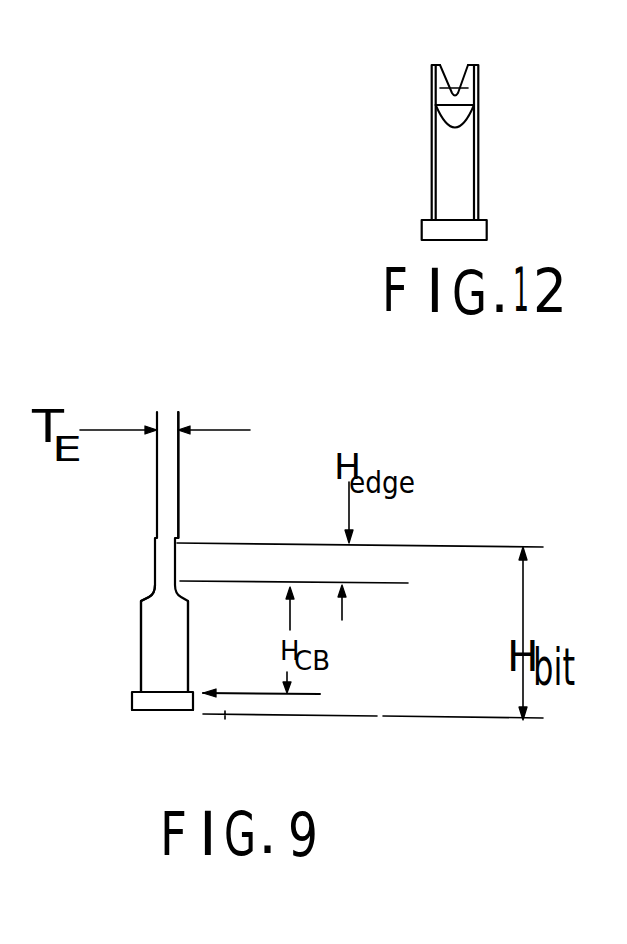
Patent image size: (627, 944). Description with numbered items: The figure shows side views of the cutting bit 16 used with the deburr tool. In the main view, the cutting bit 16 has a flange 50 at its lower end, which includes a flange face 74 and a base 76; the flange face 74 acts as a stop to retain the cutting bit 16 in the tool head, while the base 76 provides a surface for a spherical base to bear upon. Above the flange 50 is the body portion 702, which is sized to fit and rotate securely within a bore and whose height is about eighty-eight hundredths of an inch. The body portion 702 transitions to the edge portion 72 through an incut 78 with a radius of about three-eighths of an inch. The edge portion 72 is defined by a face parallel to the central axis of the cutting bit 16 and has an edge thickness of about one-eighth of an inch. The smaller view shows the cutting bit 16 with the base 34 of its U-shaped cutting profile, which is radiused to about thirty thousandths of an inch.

In FIG. 12, the cutting bit 16 is at (350, 132).
In FIG. 9, the cutting bit 16 is at (190, 402).
In FIG. 12, the base 34 is at (452, 82).
In FIG. 9, the edge portion 72 is at (176, 562).
In FIG. 9, the incut 78 is at (150, 585).
In FIG. 9, the bit body 702 is at (133, 657).
In FIG. 9, the flange face 74 is at (130, 681).
In FIG. 9, the flange 50 is at (130, 704).
In FIG. 9, the base 76 is at (161, 716).